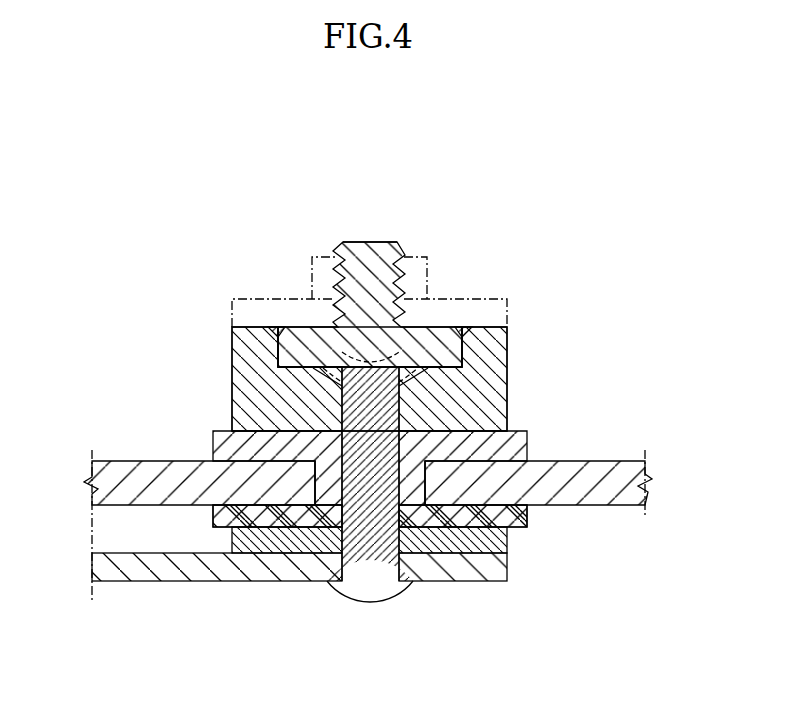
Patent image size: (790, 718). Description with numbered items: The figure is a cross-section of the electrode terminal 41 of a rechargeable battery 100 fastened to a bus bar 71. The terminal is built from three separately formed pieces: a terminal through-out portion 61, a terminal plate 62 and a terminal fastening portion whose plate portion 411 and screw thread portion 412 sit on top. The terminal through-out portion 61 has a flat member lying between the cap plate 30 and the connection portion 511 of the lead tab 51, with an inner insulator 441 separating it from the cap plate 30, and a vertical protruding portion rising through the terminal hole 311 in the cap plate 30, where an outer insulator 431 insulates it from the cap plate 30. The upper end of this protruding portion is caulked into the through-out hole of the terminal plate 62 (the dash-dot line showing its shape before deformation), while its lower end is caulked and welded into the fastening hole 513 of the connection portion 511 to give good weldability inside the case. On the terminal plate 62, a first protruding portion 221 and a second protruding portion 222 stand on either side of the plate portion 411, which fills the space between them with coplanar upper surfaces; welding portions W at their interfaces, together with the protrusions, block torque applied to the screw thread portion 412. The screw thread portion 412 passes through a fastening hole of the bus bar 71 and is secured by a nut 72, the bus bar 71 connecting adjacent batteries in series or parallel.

The rechargeable battery 100 is at (388, 122).
The electrode terminal 41 is at (332, 232).
The screw thread portion 412 is at (386, 250).
The plate portion 411 is at (438, 335).
The welding portion W is at (462, 327).
The nut 72 is at (312, 266).
The bus bar 71 is at (232, 310).
The first protruding portion 221 is at (250, 346).
The second protruding portion 222 is at (485, 347).
The terminal plate 62 is at (520, 383).
The terminal hole 311 is at (325, 462).
The outer insulator 431 is at (213, 440).
The inner insulator 441 is at (250, 527).
The connection portion 511 is at (288, 570).
The cap plate 30 is at (608, 488).
The lead tab 51 is at (150, 600).
The terminal through-out portion 61 is at (370, 540).
The fastening hole 513 is at (392, 573).